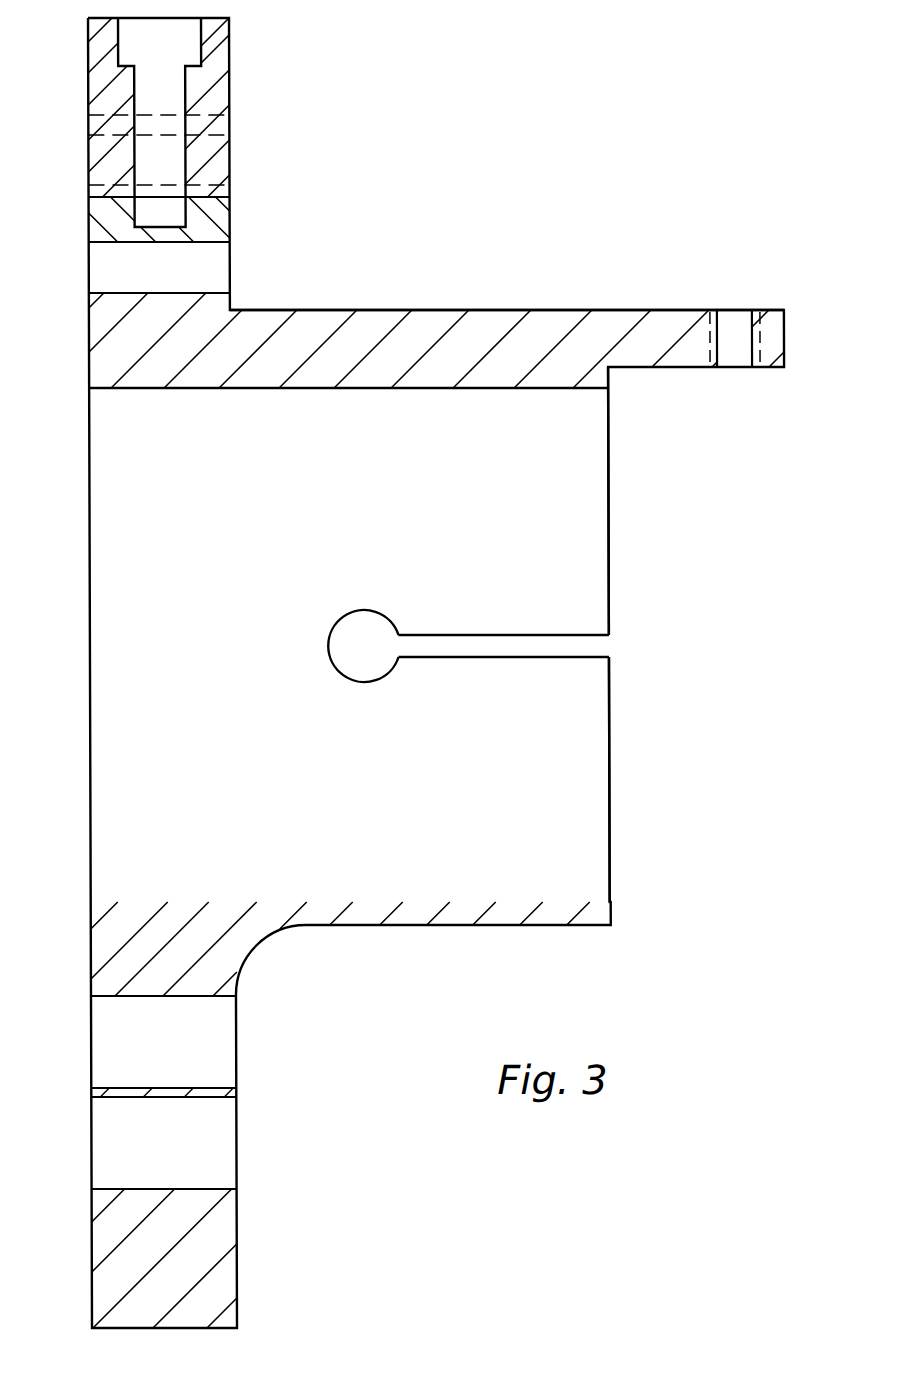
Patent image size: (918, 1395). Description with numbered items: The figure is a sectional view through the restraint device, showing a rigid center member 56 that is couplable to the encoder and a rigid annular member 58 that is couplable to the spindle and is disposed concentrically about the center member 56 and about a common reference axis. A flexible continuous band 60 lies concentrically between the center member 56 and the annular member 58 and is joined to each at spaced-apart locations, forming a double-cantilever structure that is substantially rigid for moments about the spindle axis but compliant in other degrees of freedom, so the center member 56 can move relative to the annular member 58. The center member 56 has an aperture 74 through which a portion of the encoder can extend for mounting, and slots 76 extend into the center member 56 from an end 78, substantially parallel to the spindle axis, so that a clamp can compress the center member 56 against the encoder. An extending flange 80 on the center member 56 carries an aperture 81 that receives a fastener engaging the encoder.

The center member 56 is at (88, 360).
The annular member 58 is at (232, 49).
The flexible continuous band 60 is at (232, 180).
The aperture 74 is at (137, 390).
The slots 76 is at (572, 635).
The end 78 is at (607, 428).
The extending flange 80 is at (550, 310).
The aperture 81 is at (720, 327).